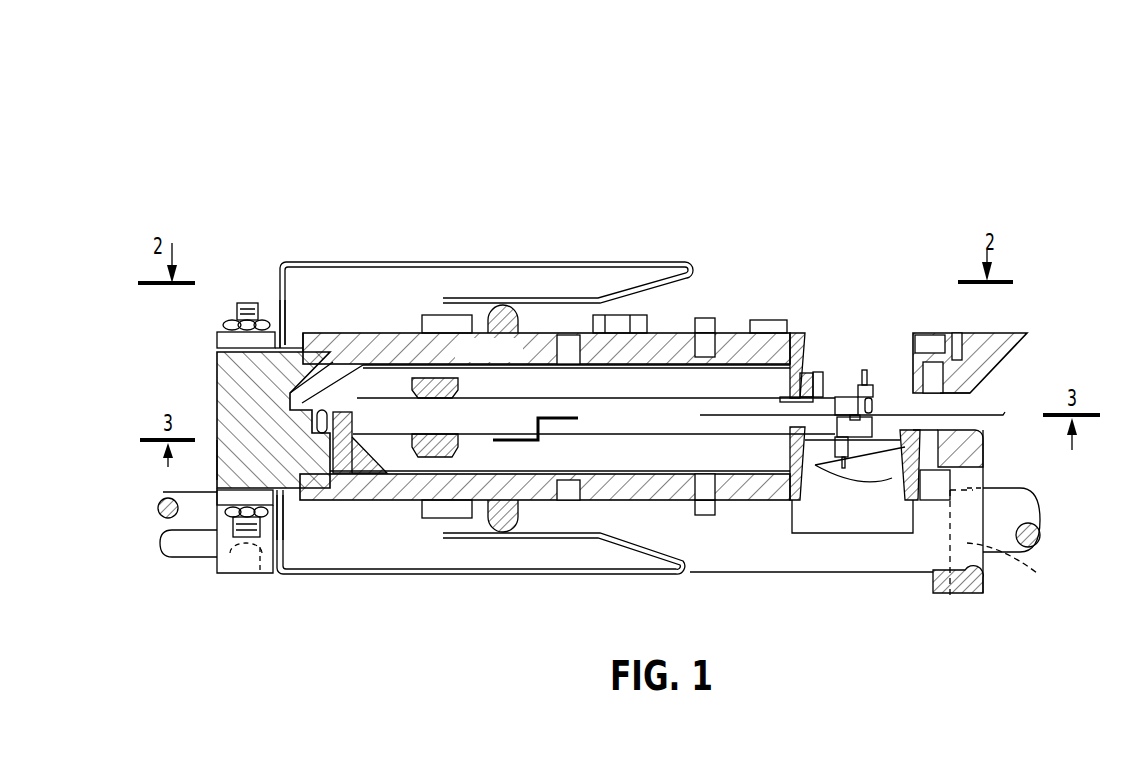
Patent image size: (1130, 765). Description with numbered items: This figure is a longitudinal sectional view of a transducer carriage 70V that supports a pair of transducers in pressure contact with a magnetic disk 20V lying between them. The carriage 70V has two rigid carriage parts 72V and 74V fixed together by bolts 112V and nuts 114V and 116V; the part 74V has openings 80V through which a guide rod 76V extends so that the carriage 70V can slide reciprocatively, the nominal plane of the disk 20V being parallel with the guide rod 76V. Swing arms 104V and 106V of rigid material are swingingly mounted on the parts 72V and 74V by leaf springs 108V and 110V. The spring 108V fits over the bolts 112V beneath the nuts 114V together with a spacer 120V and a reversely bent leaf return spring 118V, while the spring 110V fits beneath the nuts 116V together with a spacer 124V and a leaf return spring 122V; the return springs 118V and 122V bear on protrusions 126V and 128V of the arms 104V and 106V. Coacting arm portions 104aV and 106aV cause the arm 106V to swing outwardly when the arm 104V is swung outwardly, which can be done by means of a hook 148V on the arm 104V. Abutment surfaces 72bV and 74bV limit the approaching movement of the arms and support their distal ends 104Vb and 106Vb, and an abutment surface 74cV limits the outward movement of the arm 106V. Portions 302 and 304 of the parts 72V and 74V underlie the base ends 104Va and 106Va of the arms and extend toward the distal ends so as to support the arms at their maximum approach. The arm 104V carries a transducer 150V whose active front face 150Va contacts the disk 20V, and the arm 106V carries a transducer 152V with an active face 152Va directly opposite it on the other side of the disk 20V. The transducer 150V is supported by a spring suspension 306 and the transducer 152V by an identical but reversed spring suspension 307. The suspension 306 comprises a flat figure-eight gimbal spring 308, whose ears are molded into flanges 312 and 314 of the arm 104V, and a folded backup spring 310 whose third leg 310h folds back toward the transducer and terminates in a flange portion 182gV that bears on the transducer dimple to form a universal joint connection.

The magnetic disk 20V is at (702, 413).
The transducer carriage 70V is at (140, 465).
The carriage part 72V is at (215, 375).
The abutment surface 72bV is at (955, 337).
The carriage part 74V is at (215, 470).
The abutment surface 74bV is at (970, 452).
The abutment surface 74cV is at (980, 567).
The guide rod 76V is at (195, 560).
The openings 80V is at (237, 575).
The swing arm 104V is at (660, 333).
The base end of arm 104Va is at (293, 335).
The distal end of arm 104Vb is at (962, 360).
The coacting arm portion 104aV is at (312, 423).
The swing arm 106V is at (770, 500).
The base end of arm 106Va is at (325, 490).
The distal end of arm 106Vb is at (965, 483).
The coacting arm portion 106aV is at (343, 450).
The leaf spring 108V is at (299, 333).
The leaf spring 110V is at (297, 495).
The bolts 112V is at (254, 303).
The nuts 114V is at (232, 320).
The nuts 116V is at (222, 512).
The leaf return spring 118V is at (518, 262).
The spacer 120V is at (215, 341).
The leaf return spring 122V is at (532, 575).
The spacer 124V is at (220, 497).
The protrusion 126V is at (497, 320).
The protrusion 128V is at (505, 518).
The hook 148V is at (774, 320).
The transducer 150V is at (880, 407).
The active front face 150Va is at (818, 466).
The transducer 152V is at (880, 421).
The active face 152Va is at (880, 393).
The flange portion 182gV is at (838, 397).
The portion of carriage part 302 is at (303, 358).
The portion of carriage part 304 is at (322, 495).
The spring suspension 306 is at (905, 341).
The spring suspension 307 is at (861, 512).
The gimbal spring 308 is at (820, 388).
The backup spring 310 is at (830, 348).
The third leg 310h is at (848, 397).
The flange 312 is at (793, 402).
The flange 314 is at (962, 395).